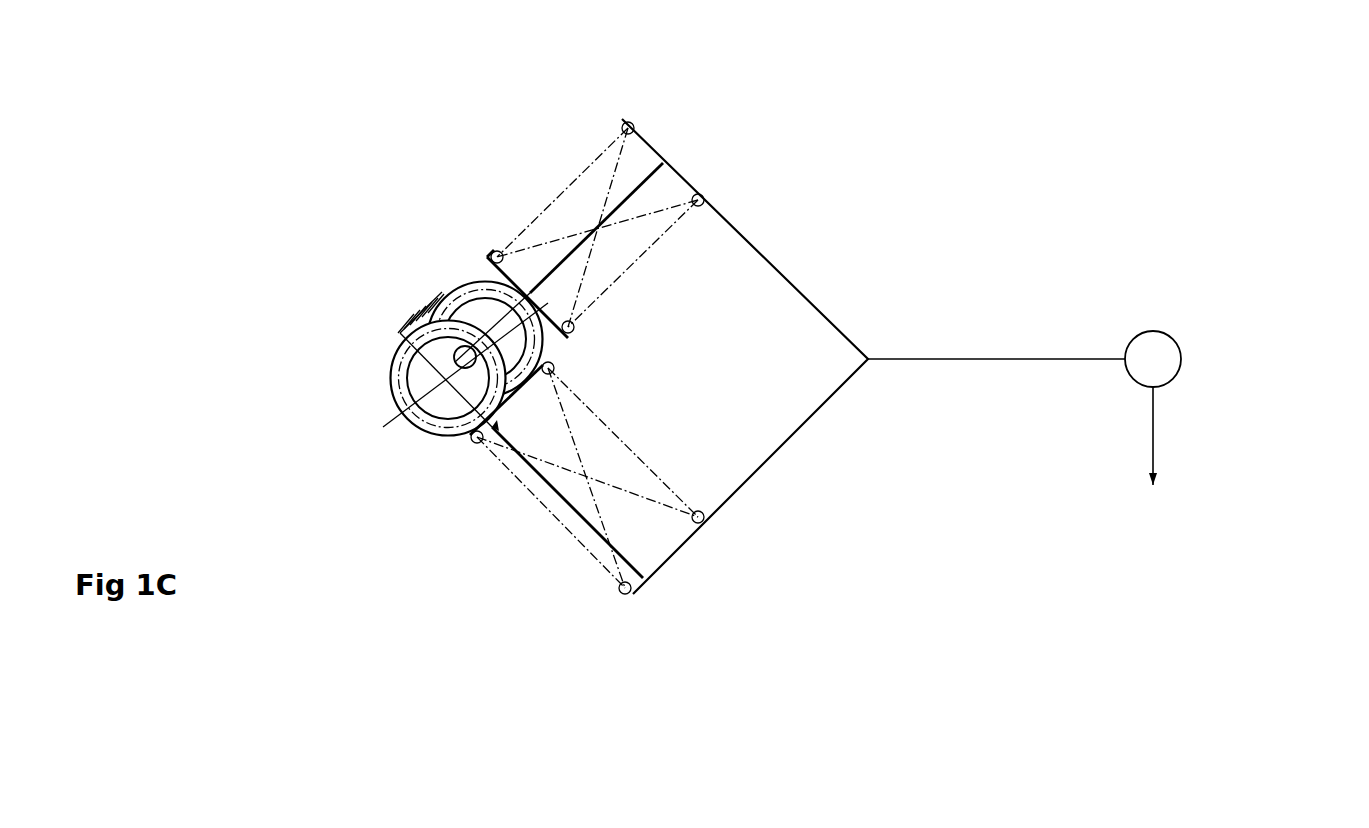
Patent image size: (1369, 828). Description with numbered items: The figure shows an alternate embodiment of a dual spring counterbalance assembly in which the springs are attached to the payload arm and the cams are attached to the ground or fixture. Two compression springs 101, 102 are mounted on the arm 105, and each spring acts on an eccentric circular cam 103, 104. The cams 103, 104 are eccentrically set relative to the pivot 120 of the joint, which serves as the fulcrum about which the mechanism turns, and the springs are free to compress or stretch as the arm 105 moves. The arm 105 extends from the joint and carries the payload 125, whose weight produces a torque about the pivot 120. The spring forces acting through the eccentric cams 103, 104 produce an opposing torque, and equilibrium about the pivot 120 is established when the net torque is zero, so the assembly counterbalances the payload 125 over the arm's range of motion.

The compression spring 101 is at (635, 597).
The compression spring 102 is at (623, 121).
The eccentric circular cam 103 is at (408, 323).
The eccentric circular cam 104 is at (455, 288).
The arm 105 is at (833, 311).
The pivot 120 is at (459, 367).
The payload 125 is at (1236, 412).